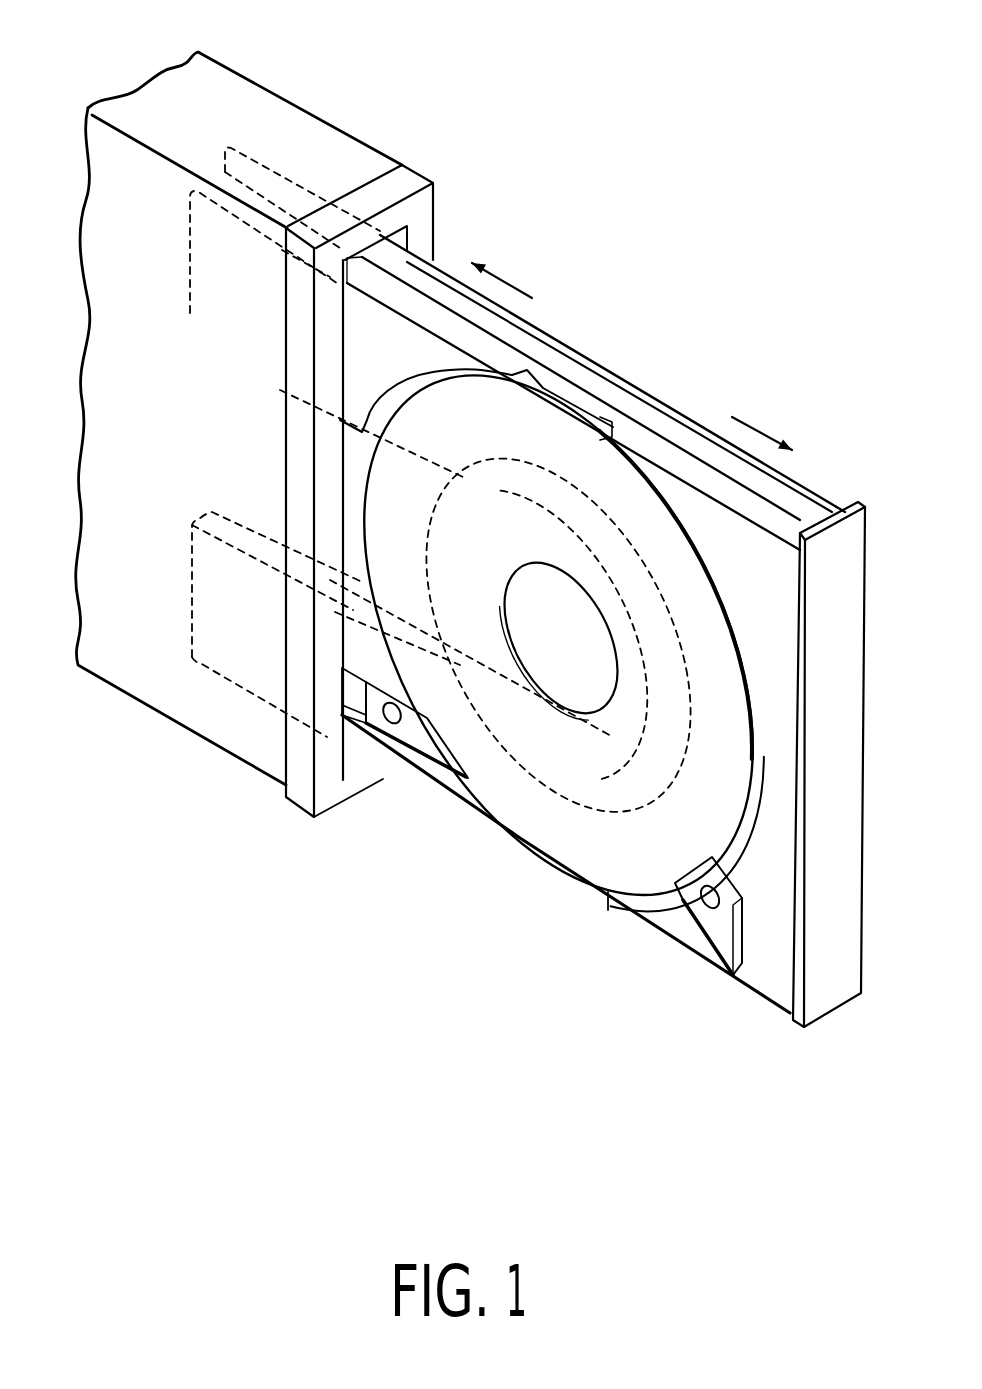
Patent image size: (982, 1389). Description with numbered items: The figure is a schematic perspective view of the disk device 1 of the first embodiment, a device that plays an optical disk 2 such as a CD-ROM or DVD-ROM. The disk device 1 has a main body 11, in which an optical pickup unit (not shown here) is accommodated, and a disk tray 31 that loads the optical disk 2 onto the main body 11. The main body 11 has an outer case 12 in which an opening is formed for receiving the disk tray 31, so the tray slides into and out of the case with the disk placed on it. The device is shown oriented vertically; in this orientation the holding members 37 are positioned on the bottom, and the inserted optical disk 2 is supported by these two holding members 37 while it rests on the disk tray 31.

The disk device 1 is at (557, 108).
The main body 11 is at (323, 143).
The outer case 12 is at (353, 768).
The optical disk 2 is at (543, 433).
The disk tray 31 is at (760, 560).
The holding members 37 is at (427, 745).